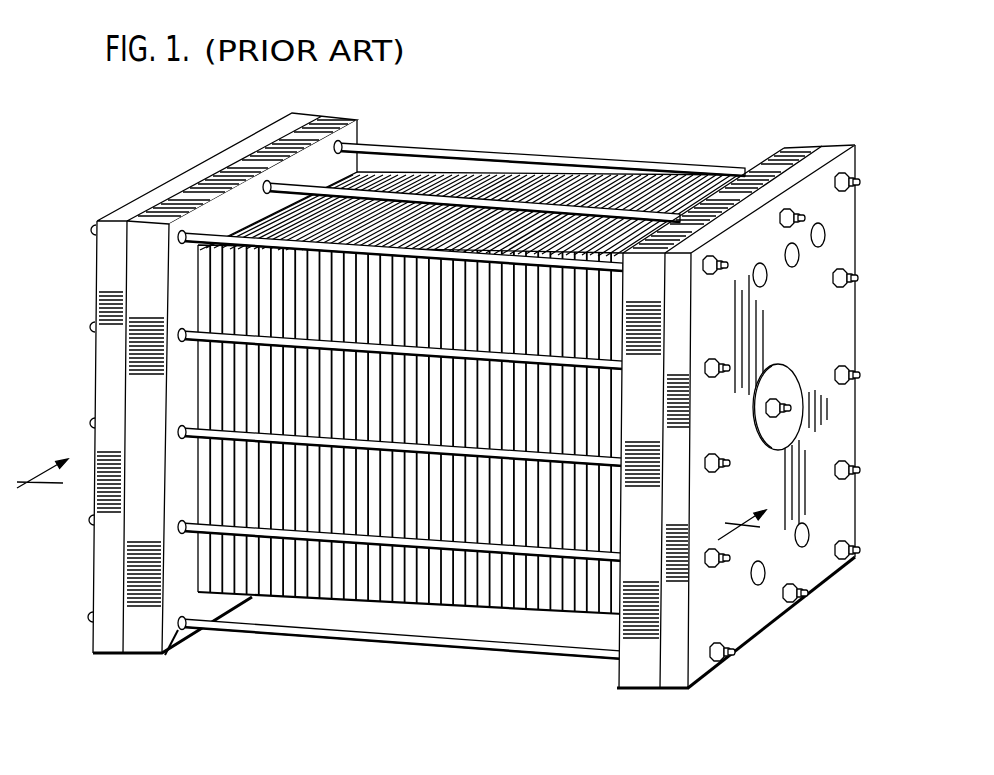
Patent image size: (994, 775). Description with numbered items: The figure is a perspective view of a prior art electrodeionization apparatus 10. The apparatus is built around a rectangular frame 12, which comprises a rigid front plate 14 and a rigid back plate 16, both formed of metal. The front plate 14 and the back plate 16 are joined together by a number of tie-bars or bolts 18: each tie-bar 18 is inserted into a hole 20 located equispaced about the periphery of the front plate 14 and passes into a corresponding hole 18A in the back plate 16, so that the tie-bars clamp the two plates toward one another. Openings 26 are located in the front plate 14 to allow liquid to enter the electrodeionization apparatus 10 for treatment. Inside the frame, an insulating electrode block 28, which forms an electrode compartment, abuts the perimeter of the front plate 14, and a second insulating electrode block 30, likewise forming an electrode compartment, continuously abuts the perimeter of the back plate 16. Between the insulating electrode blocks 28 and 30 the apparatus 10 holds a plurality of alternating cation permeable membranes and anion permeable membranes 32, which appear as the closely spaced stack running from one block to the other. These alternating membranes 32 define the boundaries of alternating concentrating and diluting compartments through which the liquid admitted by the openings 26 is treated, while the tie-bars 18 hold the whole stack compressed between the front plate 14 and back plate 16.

The electrodeionization apparatus 10 is at (693, 135).
The rectangular frame 12 is at (160, 206).
The front plate 14 is at (670, 677).
The back plate 16 is at (110, 643).
The tie-bars 18 is at (500, 150).
The holes in back plate 18A is at (187, 647).
The hole 20 is at (855, 163).
The openings 26 is at (760, 587).
The insulating electrode block 28 is at (637, 675).
The insulating electrode block 30 is at (143, 643).
The cation permeable membranes and anion permeable membranes 32 is at (447, 598).